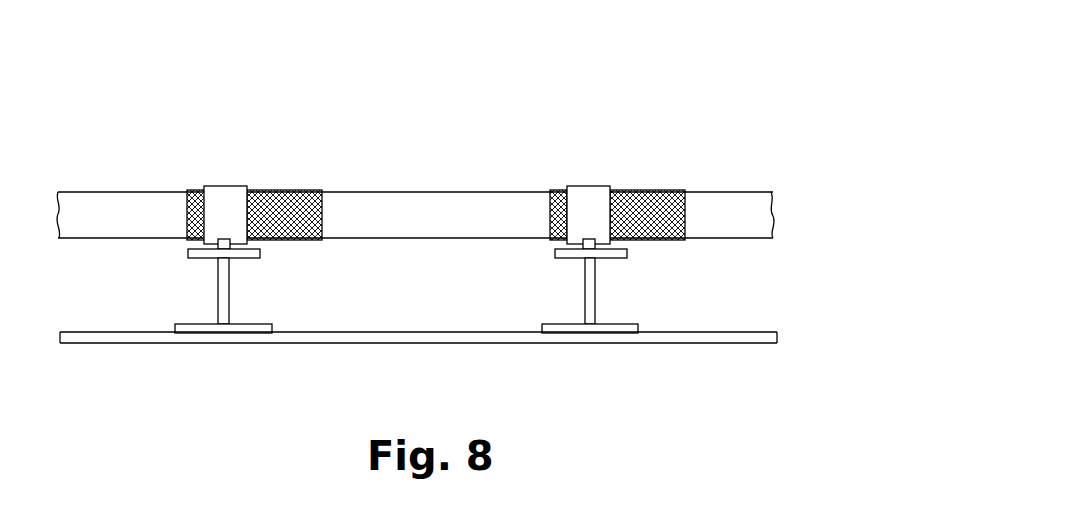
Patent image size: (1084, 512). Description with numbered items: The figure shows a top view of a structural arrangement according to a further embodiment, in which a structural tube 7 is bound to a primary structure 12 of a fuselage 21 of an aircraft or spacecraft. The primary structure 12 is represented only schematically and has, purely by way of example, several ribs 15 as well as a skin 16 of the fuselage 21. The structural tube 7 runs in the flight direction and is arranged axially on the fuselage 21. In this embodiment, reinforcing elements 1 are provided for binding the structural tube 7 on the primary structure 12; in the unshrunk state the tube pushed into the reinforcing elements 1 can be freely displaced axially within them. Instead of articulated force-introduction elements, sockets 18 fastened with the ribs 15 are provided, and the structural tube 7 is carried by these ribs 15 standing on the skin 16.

The reinforcing element 1 is at (430, 183).
The pipe 7 is at (760, 195).
The primary structure 12 is at (797, 287).
The rib 15 is at (226, 296).
The skin 16 is at (457, 334).
The socket 18 is at (224, 239).
The fuselage 21 is at (831, 313).